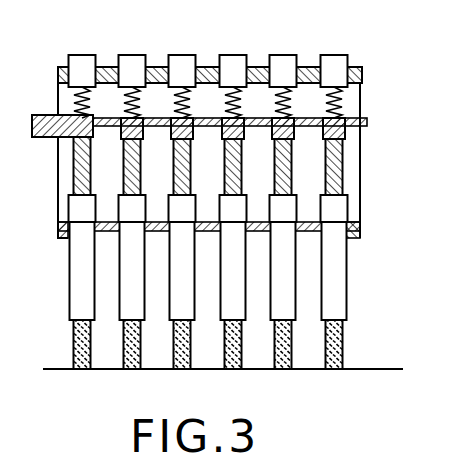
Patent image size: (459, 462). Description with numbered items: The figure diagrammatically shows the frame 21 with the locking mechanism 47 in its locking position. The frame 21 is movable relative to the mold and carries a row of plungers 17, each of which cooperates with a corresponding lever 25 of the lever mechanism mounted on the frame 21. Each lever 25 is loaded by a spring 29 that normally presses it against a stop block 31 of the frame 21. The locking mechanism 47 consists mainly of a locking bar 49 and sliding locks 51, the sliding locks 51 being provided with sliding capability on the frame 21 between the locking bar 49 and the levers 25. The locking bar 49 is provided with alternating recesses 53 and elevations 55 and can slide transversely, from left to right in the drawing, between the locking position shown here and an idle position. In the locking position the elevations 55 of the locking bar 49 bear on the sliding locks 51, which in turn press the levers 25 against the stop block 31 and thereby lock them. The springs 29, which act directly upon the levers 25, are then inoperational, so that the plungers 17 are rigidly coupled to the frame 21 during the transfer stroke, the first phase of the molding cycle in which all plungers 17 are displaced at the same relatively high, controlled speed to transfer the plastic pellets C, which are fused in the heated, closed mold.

The plunger 17 is at (348, 282).
The frame 21 is at (351, 70).
The lever 25 is at (348, 210).
The spring 29 is at (342, 106).
The stop block 31 is at (362, 233).
The locking mechanism 47 is at (349, 148).
The locking bar 49 is at (45, 115).
The sliding lock 51 is at (74, 181).
The recess 53 is at (110, 127).
The elevation 55 is at (221, 128).
The plastic pellets C is at (342, 368).